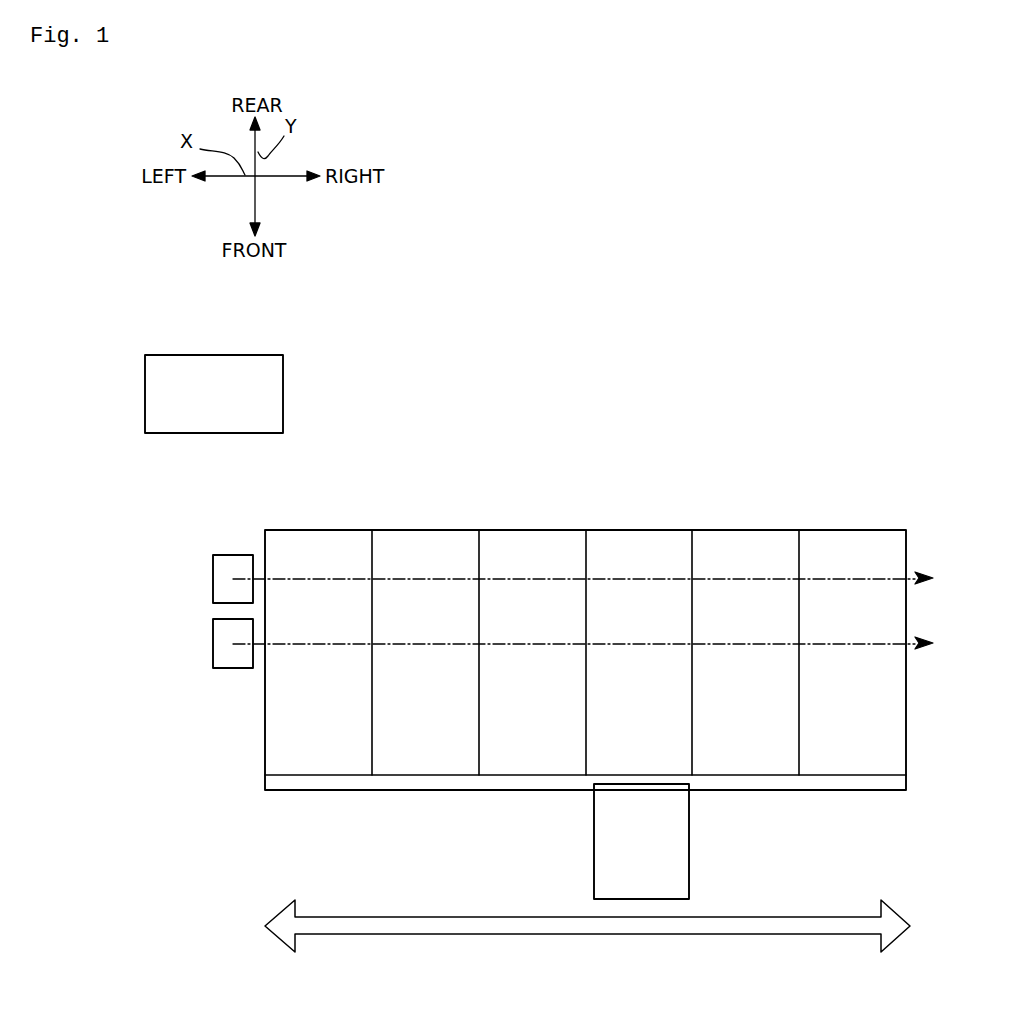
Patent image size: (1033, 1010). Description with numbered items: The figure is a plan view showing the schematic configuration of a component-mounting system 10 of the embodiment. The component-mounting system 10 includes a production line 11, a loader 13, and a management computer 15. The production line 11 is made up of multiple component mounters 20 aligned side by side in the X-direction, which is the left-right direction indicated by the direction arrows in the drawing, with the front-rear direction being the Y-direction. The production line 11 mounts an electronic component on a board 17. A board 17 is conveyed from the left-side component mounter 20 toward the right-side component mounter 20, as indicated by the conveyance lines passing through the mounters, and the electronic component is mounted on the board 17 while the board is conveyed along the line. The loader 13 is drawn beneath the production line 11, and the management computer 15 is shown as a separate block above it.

The image forming apparatus 10 is at (837, 376).
The storage unit 11 is at (906, 465).
The drive unit 13 is at (677, 876).
The controller 15 is at (210, 355).
The sensor 17 is at (219, 577).
The storage section 20 is at (320, 548).